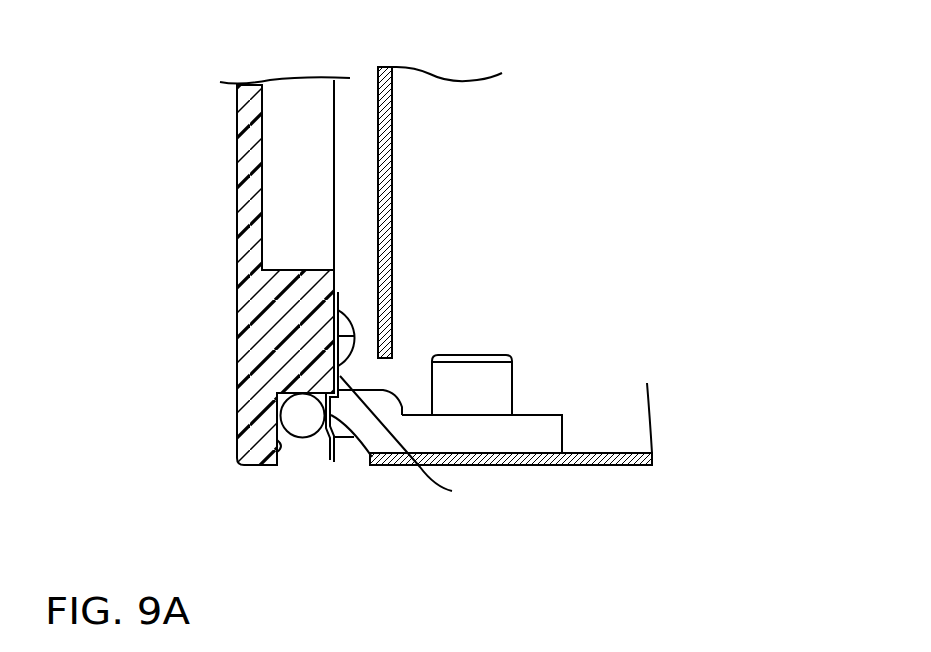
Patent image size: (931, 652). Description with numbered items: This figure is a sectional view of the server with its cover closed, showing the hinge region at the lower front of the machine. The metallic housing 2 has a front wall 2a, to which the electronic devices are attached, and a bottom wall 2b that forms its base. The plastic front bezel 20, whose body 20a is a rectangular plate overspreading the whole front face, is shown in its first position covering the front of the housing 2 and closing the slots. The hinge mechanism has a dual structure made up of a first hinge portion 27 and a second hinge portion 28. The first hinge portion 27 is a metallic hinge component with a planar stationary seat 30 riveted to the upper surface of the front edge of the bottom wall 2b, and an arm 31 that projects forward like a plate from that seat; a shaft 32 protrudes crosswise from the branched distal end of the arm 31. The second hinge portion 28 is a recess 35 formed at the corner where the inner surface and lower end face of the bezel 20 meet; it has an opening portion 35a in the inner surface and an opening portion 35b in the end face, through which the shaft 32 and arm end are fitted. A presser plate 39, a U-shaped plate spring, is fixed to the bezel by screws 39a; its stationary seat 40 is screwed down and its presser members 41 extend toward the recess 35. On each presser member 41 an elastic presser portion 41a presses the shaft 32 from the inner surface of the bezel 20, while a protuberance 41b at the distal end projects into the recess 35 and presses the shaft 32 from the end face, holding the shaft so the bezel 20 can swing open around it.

The housing 2 is at (511, 286).
The front wall 2a is at (393, 153).
The bottom wall 2b is at (623, 465).
The front bezel 20 is at (240, 271).
The body 20a is at (238, 152).
The first hinge portion 27 is at (522, 398).
The second hinge portion 28 is at (263, 481).
The stationary seat 30 is at (548, 425).
The arm 31 is at (381, 406).
The shaft 32 is at (292, 413).
The recess 35 is at (278, 446).
The opening portion 35a is at (311, 447).
The opening portion 35b is at (295, 467).
The presser plate 39 is at (345, 206).
The screw 39a is at (340, 308).
The stationary seat 40 is at (407, 441).
The presser member 41 is at (400, 505).
The presser portion 41a is at (373, 446).
The protuberance 41b is at (325, 460).